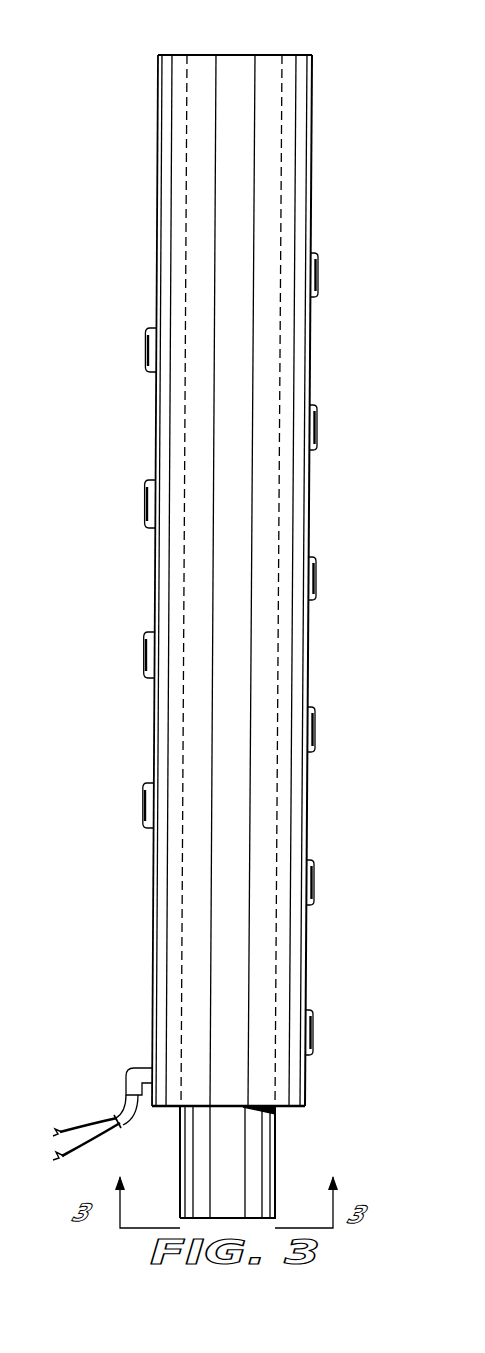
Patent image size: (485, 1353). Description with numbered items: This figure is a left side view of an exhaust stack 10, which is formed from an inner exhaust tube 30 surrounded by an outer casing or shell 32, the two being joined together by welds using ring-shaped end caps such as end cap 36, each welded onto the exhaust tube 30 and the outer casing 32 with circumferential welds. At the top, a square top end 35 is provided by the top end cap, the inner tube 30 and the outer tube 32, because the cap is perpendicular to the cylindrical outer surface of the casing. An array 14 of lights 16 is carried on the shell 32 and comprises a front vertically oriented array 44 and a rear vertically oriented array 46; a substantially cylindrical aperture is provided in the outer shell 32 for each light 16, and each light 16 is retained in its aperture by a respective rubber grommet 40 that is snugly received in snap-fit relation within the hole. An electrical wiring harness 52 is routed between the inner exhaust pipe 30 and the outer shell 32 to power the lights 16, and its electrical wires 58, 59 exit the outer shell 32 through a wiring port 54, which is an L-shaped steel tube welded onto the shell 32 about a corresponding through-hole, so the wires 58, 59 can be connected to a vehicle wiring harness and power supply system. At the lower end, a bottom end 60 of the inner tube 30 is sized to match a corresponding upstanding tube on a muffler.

The exhaust stack 10 is at (87, 125).
The array 14 is at (147, 183).
The lights 16 is at (146, 340).
The inner exhaust tube 30 is at (267, 1187).
The outer casing or shell 32 is at (313, 155).
The square top end 35 is at (291, 52).
The end cap 36 is at (294, 1109).
The rubber grommet 40 is at (148, 368).
The front vertically oriented array 44 is at (323, 710).
The rear vertically oriented array 46 is at (141, 629).
The electrical wiring harness 52 is at (118, 1116).
The wiring port 54 is at (127, 1074).
The electrical wire 58 is at (70, 1128).
The electrical wire 59 is at (66, 1157).
The bottom end 60 is at (177, 1196).